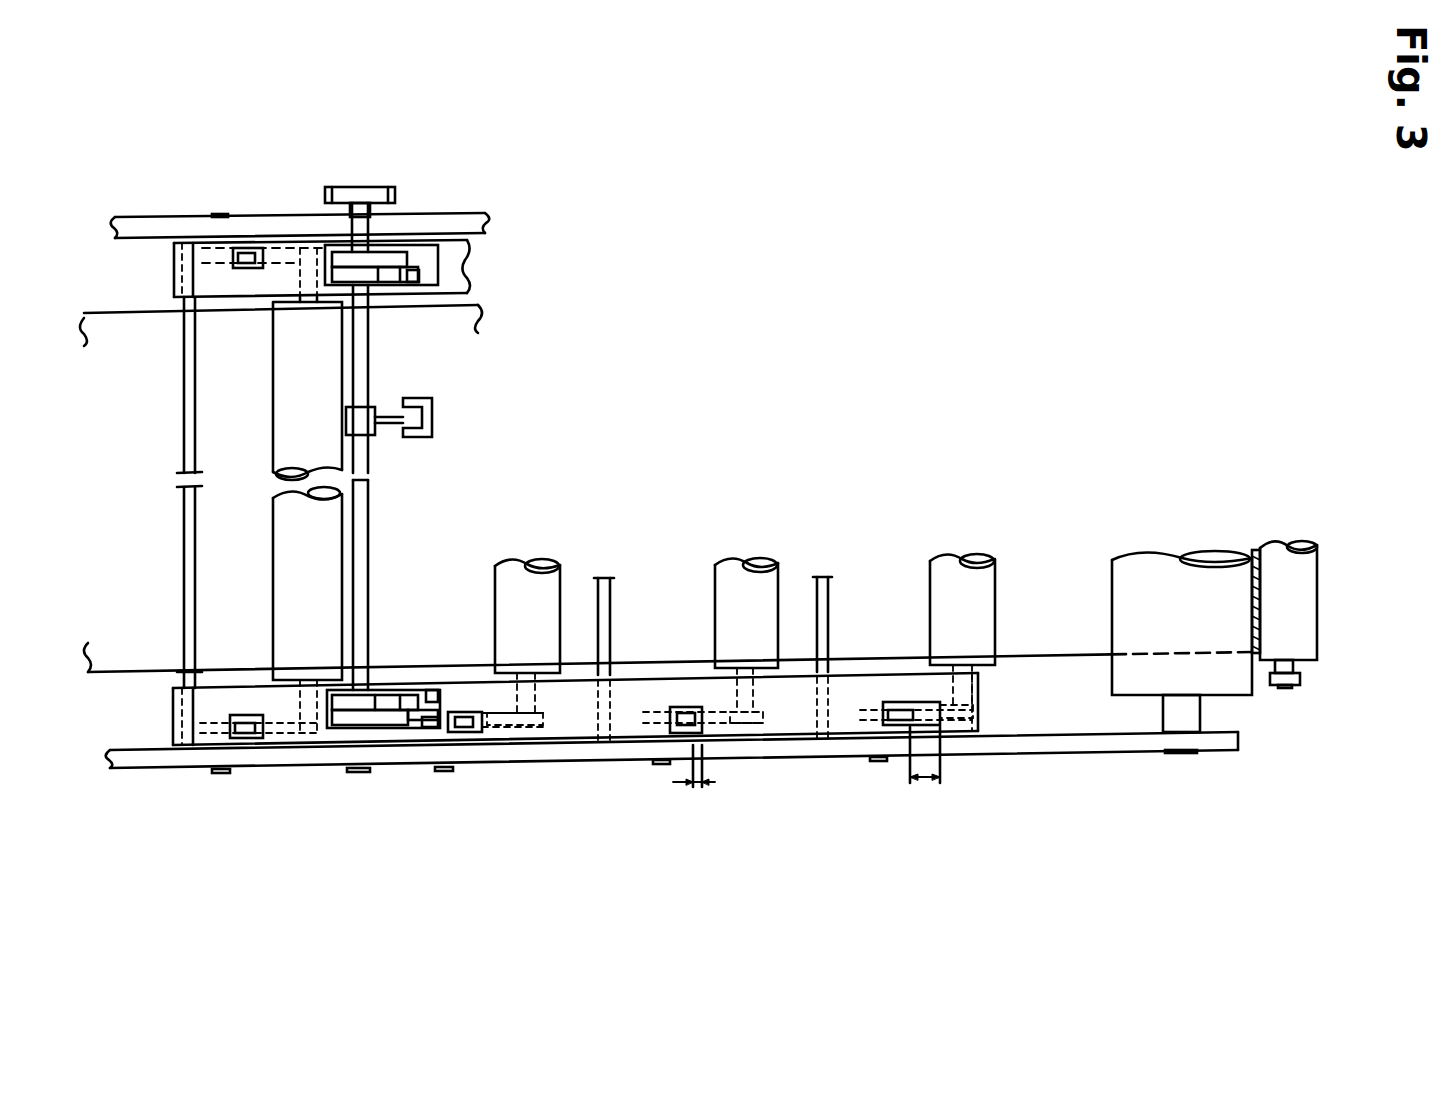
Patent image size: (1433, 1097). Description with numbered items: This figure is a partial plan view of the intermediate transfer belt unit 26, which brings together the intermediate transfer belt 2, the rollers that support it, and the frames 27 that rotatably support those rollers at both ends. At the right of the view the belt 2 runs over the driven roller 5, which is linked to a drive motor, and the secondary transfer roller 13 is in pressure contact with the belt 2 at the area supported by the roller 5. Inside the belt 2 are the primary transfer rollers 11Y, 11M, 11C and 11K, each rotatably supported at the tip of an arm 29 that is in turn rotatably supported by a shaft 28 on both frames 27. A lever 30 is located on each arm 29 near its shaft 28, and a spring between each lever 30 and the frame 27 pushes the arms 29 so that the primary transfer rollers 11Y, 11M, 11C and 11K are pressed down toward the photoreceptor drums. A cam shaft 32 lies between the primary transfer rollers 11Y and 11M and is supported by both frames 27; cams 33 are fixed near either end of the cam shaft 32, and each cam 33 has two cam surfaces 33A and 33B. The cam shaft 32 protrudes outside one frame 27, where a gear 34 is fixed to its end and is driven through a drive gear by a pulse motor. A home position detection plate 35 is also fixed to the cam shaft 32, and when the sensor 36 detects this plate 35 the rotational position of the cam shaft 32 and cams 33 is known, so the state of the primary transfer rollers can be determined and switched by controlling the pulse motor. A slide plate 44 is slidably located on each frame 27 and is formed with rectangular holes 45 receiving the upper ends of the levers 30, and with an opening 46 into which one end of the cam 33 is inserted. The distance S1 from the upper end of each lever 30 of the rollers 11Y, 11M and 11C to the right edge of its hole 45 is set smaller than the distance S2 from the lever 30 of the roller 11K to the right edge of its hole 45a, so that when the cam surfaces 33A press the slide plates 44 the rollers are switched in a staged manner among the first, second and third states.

The intermediate transfer belt unit 26 is at (760, 329).
The frame 27 is at (460, 213).
The shaft 28 is at (218, 213).
The arm 29 is at (285, 240).
The lever 30 is at (248, 253).
The cam shaft 32 is at (370, 520).
The cam 33 is at (388, 250).
The cam surface 33A is at (412, 690).
The cam surface 33B is at (405, 730).
The gear 34 is at (358, 187).
The home position detection plate 35 is at (390, 423).
The sensor 36 is at (433, 418).
The slide plate 44 is at (452, 298).
The rectangular hole 45 is at (243, 270).
The hole 45a is at (920, 727).
The opening 46 is at (418, 283).
The primary transfer roller 11Y is at (273, 587).
The primary transfer roller 11M is at (493, 588).
The primary transfer roller 11C is at (715, 582).
The primary transfer roller 11K is at (932, 574).
The roller 5 is at (1112, 577).
The intermediate transfer belt 2 is at (1283, 598).
The secondary transfer roller 13 is at (1317, 610).
The distance S1 is at (694, 786).
The distance S2 is at (928, 771).